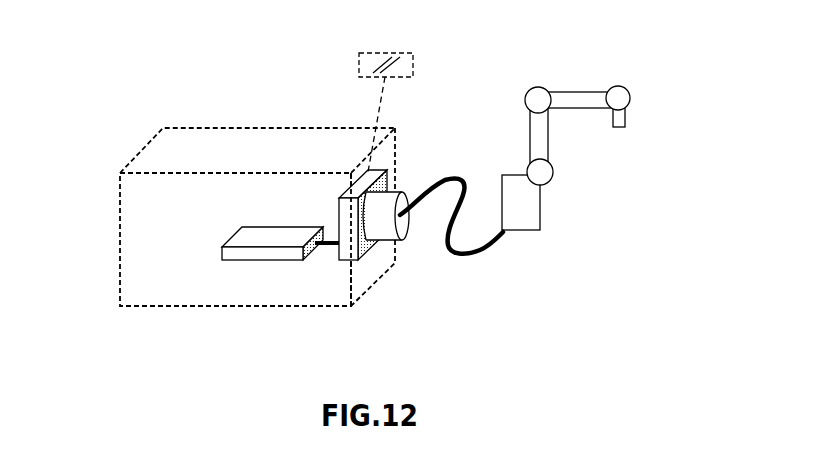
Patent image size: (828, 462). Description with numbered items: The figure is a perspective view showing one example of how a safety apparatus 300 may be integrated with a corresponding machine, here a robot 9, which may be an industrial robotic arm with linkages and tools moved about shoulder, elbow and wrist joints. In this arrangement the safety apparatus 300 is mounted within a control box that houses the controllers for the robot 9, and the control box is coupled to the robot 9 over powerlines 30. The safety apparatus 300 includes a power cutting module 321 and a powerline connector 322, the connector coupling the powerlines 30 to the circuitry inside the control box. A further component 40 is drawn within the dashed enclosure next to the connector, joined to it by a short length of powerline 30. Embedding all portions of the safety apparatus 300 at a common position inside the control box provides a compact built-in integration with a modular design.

The robot 9 is at (518, 137).
The powerlines 30 is at (320, 247).
The control device 40 is at (278, 253).
The safety apparatus 300 is at (353, 186).
The power cutting module 321 is at (358, 62).
The powerline connector 322 is at (383, 233).